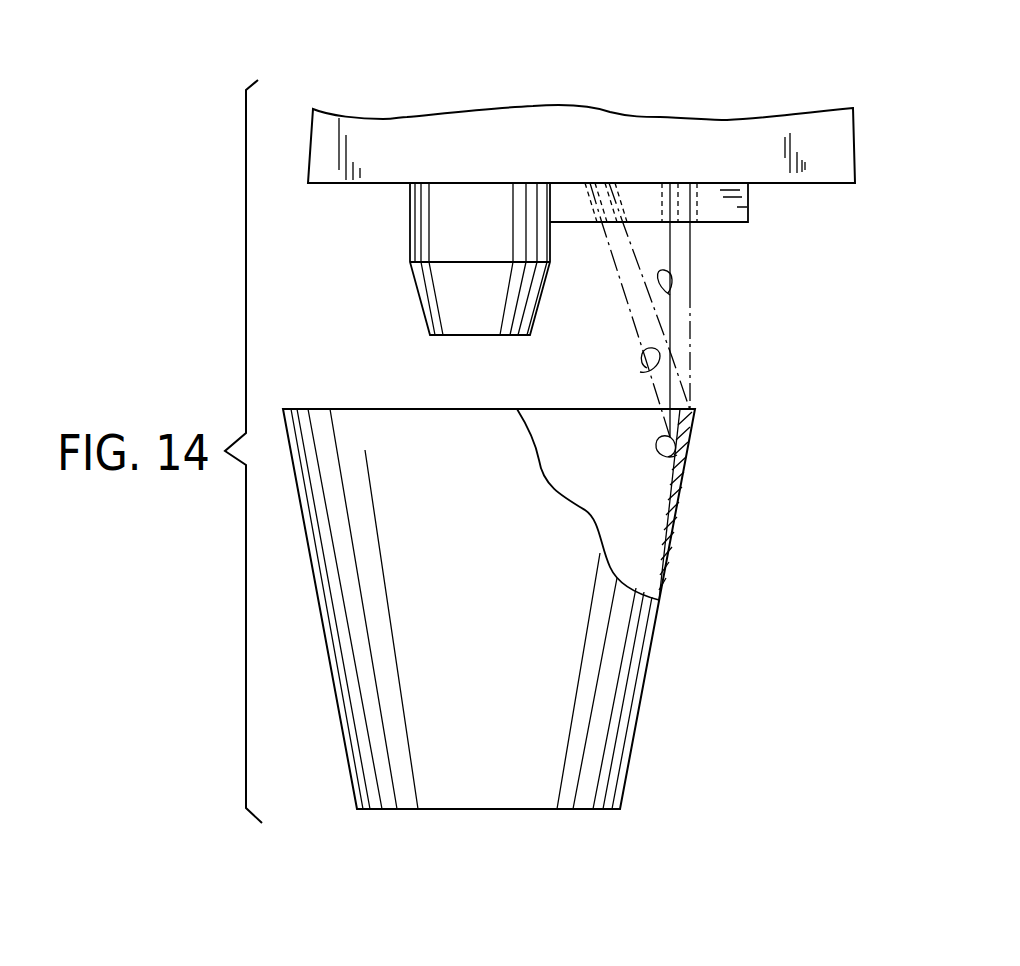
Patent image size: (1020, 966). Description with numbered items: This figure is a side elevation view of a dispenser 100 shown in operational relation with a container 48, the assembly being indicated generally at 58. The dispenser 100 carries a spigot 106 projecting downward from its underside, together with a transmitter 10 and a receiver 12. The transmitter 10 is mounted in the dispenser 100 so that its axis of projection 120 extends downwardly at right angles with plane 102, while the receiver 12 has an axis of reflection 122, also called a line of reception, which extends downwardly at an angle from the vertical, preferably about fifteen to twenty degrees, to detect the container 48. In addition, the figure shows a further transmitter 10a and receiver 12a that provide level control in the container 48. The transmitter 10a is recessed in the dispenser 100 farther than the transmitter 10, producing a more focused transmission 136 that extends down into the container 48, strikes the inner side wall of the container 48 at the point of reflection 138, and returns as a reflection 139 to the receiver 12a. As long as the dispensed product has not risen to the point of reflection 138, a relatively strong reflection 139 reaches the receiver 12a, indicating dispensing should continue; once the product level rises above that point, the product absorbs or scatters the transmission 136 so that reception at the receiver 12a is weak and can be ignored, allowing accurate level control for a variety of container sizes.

The dispenser 100 is at (408, 127).
The plane 102 is at (722, 222).
The spigot 106 is at (441, 232).
The assembly 58 is at (370, 308).
The receiver 12a is at (588, 183).
The receiver 12 is at (612, 183).
The transmitter 10a is at (668, 187).
The transmitter 10 is at (688, 183).
The axis of projection 120 is at (690, 262).
The axis of reflection 122 is at (670, 312).
The transmission 136 is at (670, 312).
The reflection 139 is at (640, 372).
The point of reflection 138 is at (677, 455).
The container 48 is at (490, 611).